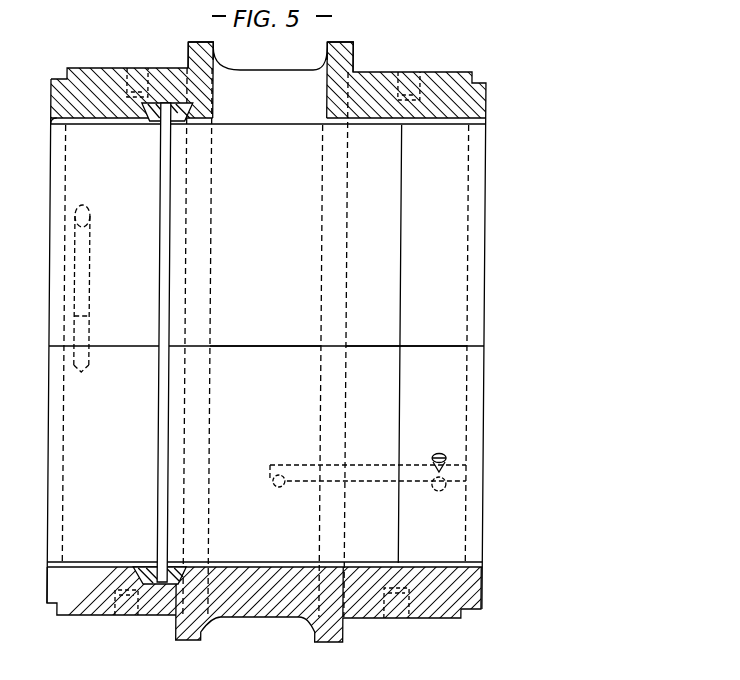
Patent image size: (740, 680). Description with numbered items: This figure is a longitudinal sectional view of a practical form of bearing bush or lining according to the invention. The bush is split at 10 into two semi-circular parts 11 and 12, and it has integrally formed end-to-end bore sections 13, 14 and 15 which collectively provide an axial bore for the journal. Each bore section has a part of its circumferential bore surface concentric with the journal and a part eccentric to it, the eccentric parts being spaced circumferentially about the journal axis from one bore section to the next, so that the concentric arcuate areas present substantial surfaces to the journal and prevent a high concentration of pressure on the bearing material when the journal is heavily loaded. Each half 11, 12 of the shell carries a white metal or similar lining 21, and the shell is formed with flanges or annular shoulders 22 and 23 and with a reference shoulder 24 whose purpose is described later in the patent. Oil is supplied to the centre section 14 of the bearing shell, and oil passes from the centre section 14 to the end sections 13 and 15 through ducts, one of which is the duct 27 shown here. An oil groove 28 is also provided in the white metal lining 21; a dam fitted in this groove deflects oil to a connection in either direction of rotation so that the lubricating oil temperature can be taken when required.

The split 10 is at (426, 345).
The semi-circular part 11 is at (92, 75).
The semi-circular part 12 is at (278, 619).
The bore section 13 is at (130, 265).
The centre bore section 14 is at (271, 271).
The bore section 15 is at (449, 271).
The white metal lining 21 is at (234, 563).
The flange 22 is at (193, 50).
The flange 23 is at (351, 53).
The reference shoulder 24 is at (68, 78).
The duct 27 is at (452, 465).
The oil groove 28 is at (160, 517).